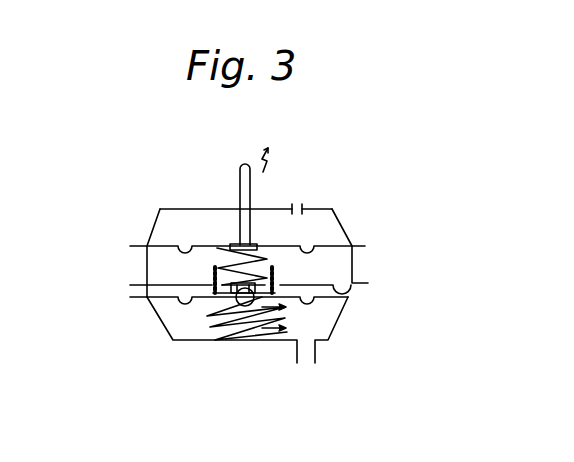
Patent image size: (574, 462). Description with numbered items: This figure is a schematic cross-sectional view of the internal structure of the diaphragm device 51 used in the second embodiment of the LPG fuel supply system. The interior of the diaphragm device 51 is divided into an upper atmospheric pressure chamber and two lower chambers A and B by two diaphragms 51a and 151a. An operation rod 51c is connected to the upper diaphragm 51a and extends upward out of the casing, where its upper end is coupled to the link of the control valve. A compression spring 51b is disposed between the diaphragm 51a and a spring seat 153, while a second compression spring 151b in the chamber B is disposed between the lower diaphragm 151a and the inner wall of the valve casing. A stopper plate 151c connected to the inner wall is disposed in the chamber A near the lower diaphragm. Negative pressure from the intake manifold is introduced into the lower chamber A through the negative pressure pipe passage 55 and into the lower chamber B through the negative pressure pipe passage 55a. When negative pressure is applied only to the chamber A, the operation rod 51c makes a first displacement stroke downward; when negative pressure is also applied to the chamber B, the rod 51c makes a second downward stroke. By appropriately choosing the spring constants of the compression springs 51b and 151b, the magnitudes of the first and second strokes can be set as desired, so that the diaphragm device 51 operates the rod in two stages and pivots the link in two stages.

The diaphragm device 51 is at (321, 204).
The diaphragm 51a is at (333, 247).
The compression spring 51b is at (208, 247).
The operation rod 51c is at (252, 187).
The spring seat 153 is at (215, 284).
The diaphragm 151a is at (165, 300).
The compression spring 151b is at (258, 340).
The stopper plate 151c is at (350, 300).
The negative pressure pipe passage 55 is at (374, 275).
The negative pressure pipe passage 55a is at (307, 376).
The lower chamber A is at (336, 260).
The lower chamber B is at (333, 304).